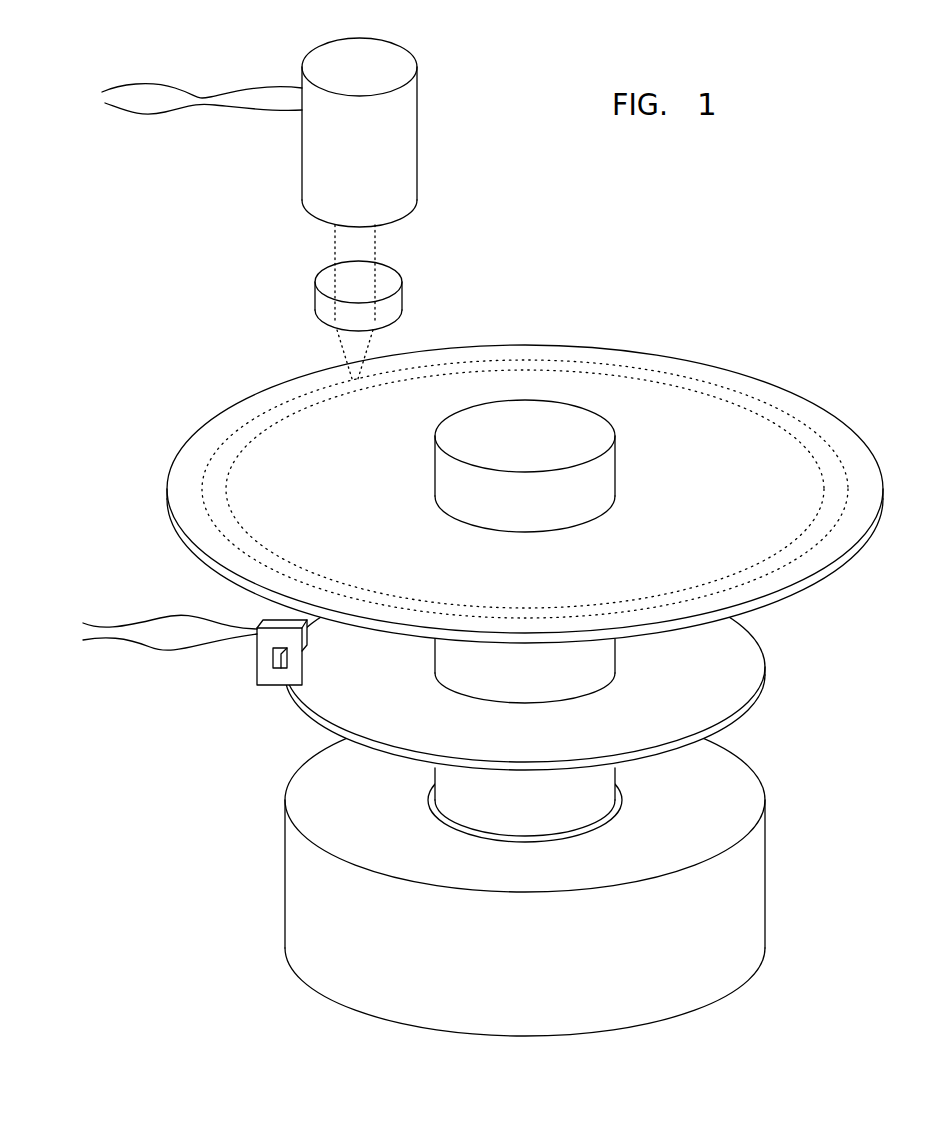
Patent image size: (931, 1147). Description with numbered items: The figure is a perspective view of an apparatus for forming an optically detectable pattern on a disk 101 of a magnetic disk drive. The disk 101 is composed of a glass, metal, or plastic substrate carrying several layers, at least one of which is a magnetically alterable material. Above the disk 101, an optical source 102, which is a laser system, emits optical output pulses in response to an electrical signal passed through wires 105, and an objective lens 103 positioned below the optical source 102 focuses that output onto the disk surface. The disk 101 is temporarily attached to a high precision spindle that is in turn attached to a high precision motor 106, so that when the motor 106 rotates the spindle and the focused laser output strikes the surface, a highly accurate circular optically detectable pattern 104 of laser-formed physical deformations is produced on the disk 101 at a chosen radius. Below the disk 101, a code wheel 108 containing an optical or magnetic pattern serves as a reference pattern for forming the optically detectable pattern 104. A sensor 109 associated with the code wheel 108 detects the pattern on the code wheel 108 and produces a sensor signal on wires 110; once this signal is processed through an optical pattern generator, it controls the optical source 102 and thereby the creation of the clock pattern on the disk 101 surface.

The disk 101 is at (713, 372).
The optical source 102 is at (405, 43).
The objective lens 103 is at (313, 272).
The optically detectable pattern 104 is at (313, 400).
The wires 105 is at (98, 98).
The high precision motor 106 is at (765, 857).
The code wheel 108 is at (775, 660).
The sensor 109 is at (255, 668).
The wires 110 is at (82, 632).